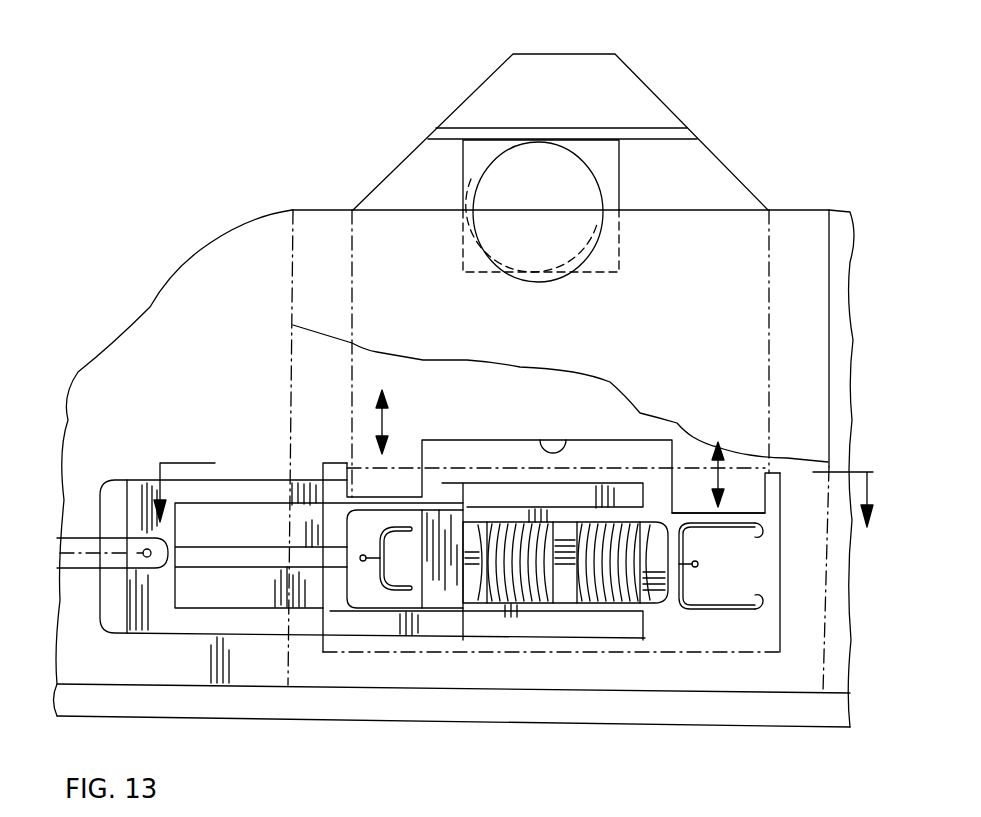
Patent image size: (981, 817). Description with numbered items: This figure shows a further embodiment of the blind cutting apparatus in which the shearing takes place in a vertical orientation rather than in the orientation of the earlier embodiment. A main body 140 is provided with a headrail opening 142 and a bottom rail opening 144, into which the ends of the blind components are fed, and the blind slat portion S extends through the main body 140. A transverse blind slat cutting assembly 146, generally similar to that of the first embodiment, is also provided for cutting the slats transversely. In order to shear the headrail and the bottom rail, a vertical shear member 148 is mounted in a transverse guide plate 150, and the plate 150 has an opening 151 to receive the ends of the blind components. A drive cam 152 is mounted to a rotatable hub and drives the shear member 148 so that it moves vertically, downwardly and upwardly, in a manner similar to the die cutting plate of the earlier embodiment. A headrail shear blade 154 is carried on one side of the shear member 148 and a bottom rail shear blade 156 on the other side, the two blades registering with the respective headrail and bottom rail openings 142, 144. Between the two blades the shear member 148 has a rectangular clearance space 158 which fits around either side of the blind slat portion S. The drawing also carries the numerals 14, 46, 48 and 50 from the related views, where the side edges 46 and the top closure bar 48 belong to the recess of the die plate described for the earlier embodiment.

The section line / direction arrows 14 is at (518, 477).
The side edges 46 is at (462, 173).
The top closure bar 48 is at (558, 127).
The roller 50 is at (593, 170).
The main body 140 is at (252, 330).
The headrail opening 142 is at (727, 611).
The bottom rail opening 144 is at (397, 592).
The transverse blind slat cutting assembly 146 is at (190, 622).
The vertical shear member 148 is at (590, 410).
The transverse guide plate 150 is at (687, 298).
The opening 151 is at (762, 655).
The drive cam 152 is at (537, 284).
The headrail shear blade 154 is at (740, 477).
The bottom rail shear blade 156 is at (377, 476).
The rectangular clearance space 158 is at (552, 437).
The blind slat portion S is at (514, 598).